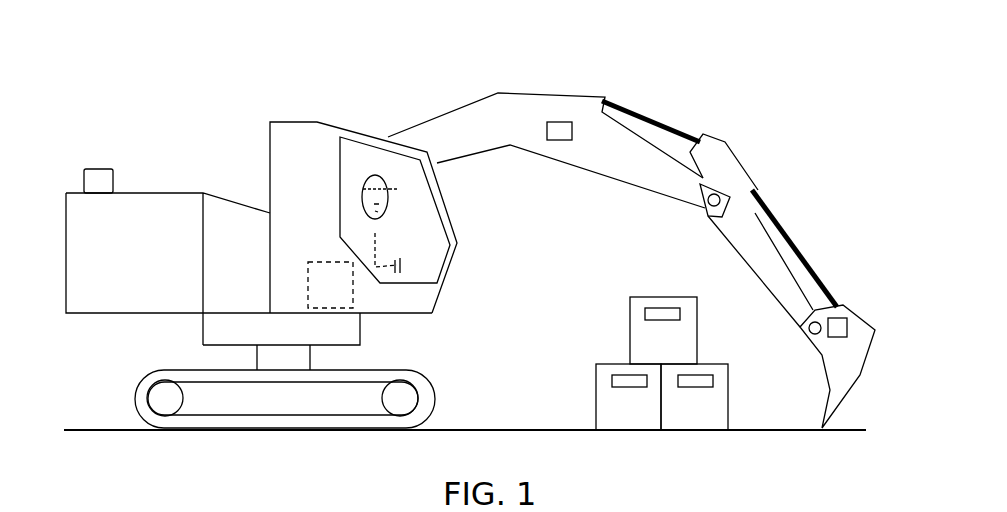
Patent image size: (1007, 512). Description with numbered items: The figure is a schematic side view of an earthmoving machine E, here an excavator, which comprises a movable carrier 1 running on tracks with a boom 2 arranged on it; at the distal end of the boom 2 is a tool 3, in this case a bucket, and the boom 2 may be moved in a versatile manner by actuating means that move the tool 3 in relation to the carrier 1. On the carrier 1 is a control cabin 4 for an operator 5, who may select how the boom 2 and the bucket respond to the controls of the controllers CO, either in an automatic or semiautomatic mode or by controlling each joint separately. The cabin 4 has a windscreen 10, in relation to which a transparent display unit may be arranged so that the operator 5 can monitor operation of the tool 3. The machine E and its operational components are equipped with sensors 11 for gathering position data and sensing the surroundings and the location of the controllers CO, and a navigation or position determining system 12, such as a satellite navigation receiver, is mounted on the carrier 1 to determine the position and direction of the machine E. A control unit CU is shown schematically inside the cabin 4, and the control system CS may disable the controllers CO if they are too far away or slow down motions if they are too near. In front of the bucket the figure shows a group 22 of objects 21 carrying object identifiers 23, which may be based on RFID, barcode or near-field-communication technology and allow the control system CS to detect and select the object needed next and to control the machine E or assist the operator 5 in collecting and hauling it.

The earthmoving machine E is at (172, 50).
The movable carrier 1 is at (193, 162).
The boom 2 is at (480, 65).
The tool 3 is at (850, 355).
The control cabin 4 is at (312, 147).
The operator 5 is at (370, 177).
The windscreen 10 is at (442, 192).
The sensors 11 is at (555, 122).
The navigation or position determining system 12 is at (98, 168).
The objects 21 is at (646, 423).
The group of objects 22 is at (620, 272).
The object identifiers 23 is at (655, 313).
The control unit CU is at (332, 261).
The controllers CO is at (393, 257).
The control system CS is at (462, 272).